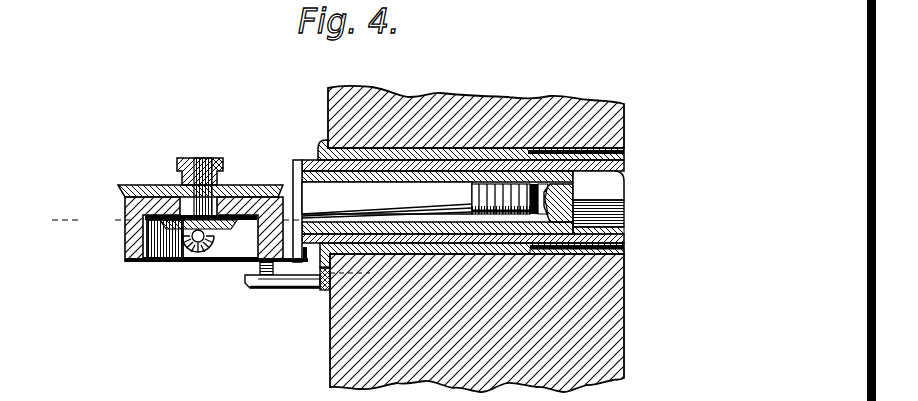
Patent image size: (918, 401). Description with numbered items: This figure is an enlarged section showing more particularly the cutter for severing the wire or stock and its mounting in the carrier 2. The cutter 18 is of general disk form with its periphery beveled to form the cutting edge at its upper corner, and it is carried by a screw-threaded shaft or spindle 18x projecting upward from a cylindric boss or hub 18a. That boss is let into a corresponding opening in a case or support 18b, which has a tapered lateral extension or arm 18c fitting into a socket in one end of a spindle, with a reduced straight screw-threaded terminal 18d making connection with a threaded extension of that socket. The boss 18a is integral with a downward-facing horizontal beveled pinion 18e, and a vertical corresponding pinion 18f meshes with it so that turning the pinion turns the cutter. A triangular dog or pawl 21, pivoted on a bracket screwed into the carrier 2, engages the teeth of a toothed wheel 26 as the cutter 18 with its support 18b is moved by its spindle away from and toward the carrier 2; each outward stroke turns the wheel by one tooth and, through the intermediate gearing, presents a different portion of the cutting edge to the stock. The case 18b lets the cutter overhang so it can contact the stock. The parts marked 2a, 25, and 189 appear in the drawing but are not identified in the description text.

The carrier 2 is at (465, 239).
The bushing 2a is at (323, 152).
The cutter 18 is at (362, 209).
The cylindric boss or hub 18a is at (182, 200).
The case or support 18b is at (168, 215).
The tapered lateral extension or arm 18c is at (416, 199).
The screw-threaded terminal 18d is at (546, 201).
The horizontal beveled pinion 18e is at (150, 228).
The vertical pinion 18f is at (190, 263).
The screw-threaded shaft or spindle 18x is at (226, 149).
The dog or pawl 21 is at (266, 290).
The toothed wheel 25 is at (216, 243).
The toothed wheel or pinion 26 is at (258, 265).
The casing bottom 189 is at (160, 263).